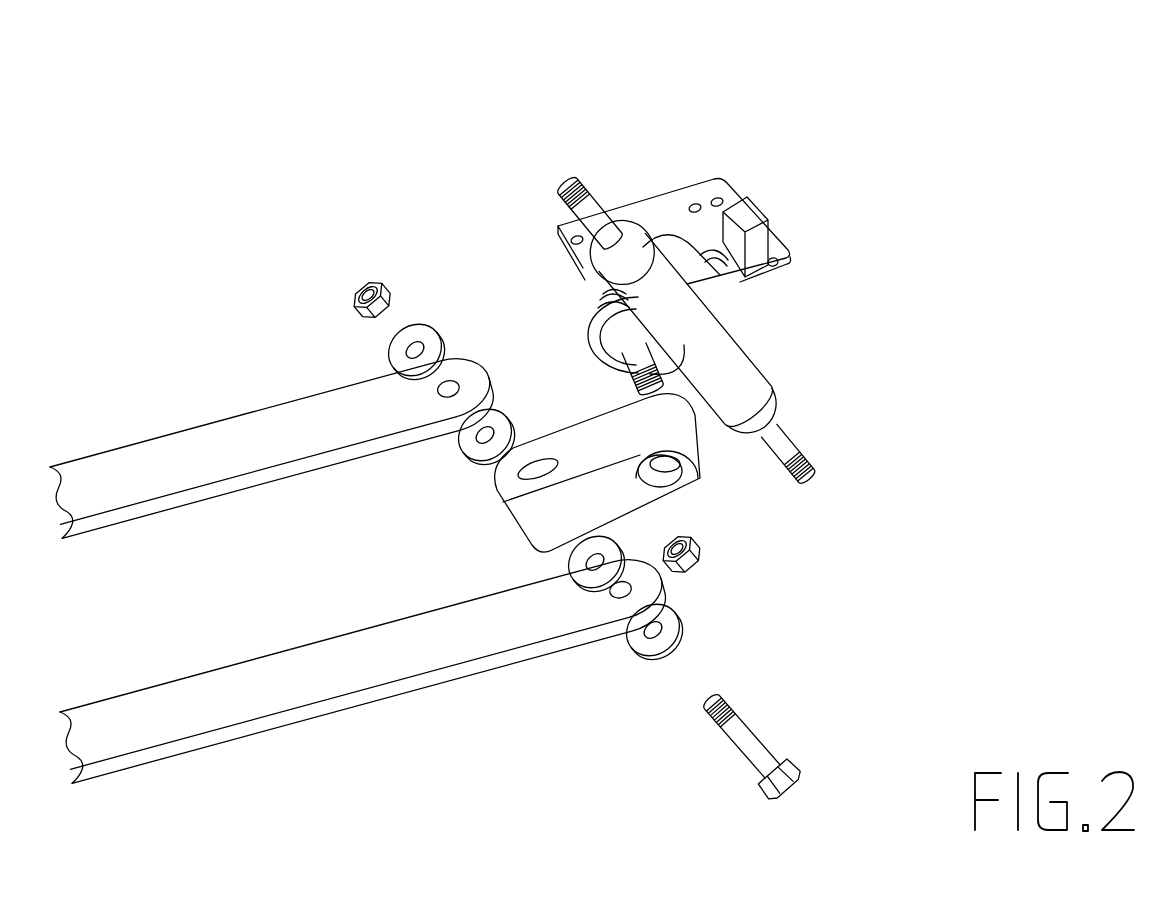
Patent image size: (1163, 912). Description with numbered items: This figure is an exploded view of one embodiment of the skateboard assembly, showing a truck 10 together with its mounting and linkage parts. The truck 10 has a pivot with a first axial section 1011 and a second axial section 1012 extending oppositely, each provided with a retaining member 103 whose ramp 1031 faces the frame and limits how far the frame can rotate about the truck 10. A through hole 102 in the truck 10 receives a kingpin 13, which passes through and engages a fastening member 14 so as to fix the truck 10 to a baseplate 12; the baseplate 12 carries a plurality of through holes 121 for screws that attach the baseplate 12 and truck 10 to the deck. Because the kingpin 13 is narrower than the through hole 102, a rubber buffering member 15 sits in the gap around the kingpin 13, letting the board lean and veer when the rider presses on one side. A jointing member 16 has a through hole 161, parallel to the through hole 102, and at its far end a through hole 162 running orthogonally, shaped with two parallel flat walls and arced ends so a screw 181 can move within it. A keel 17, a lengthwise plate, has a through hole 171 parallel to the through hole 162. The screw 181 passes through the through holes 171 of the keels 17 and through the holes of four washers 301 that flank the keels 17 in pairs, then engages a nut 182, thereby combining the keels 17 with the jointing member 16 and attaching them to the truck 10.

The truck 10 is at (761, 250).
The first axial section 1011 is at (575, 178).
The second axial section 1012 is at (818, 468).
The through hole 102 is at (620, 323).
The retaining member 103 is at (768, 403).
The ramp 1031 is at (630, 243).
The baseplate 12 is at (792, 258).
The through holes 121 is at (720, 202).
The kingpin 13 is at (630, 393).
The fastening member 14 is at (695, 542).
The buffering member 15 is at (617, 338).
The jointing member 16 is at (653, 498).
The through hole 161 is at (668, 480).
The through hole 162 is at (522, 478).
The keel 17 is at (155, 468).
The through hole 171 is at (447, 390).
The screw 181 is at (755, 750).
The nut 182 is at (387, 290).
The washers 301 is at (392, 358).